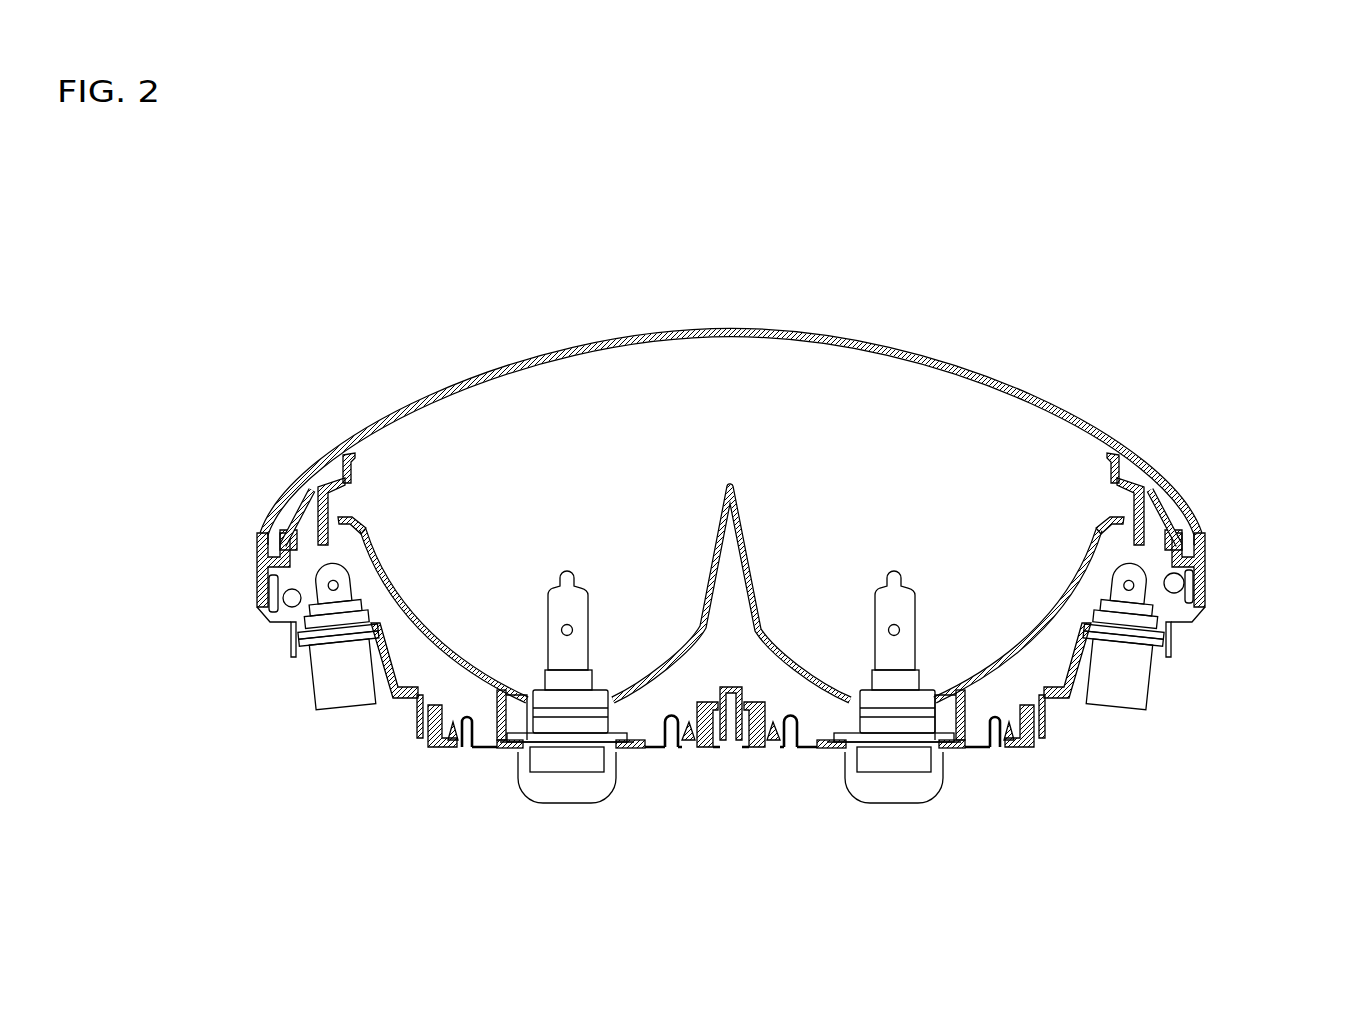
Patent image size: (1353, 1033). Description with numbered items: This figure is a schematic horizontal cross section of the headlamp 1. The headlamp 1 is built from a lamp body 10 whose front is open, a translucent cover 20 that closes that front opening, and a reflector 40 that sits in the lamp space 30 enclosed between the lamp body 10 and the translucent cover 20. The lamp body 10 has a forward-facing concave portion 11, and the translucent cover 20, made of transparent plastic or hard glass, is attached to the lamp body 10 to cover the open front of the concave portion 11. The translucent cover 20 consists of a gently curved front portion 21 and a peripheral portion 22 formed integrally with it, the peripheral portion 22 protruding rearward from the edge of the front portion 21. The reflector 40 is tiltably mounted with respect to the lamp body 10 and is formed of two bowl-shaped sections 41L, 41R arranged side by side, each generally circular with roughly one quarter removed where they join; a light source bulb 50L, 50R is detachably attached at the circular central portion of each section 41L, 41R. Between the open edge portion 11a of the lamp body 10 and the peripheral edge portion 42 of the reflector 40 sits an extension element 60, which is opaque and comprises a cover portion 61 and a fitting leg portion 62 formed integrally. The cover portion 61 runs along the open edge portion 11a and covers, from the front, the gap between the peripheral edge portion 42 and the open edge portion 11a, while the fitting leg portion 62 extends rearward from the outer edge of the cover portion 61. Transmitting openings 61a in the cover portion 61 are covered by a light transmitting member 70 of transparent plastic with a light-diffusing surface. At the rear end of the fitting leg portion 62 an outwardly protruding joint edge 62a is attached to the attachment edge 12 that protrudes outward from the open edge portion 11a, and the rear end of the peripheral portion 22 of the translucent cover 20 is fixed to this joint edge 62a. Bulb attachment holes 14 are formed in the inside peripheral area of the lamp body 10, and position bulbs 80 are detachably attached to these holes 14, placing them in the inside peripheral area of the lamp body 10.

The headlamp 1 is at (1000, 338).
The lamp body 10 is at (1185, 622).
The concave portion 11 is at (418, 668).
The open edge portion 11a is at (266, 620).
The attachment edge 12 is at (282, 628).
The bulb attachment hole 14 is at (322, 660).
The translucent cover 20 is at (683, 330).
The front portion 21 is at (548, 347).
The peripheral portion 22 is at (257, 530).
The lamp space 30 is at (1058, 640).
The reflector 40 is at (737, 512).
The left side section 41L is at (450, 600).
The right side section 41R is at (1063, 567).
The peripheral edge portion 42 is at (343, 548).
The light source bulb 50L is at (580, 585).
The light source bulb 50R is at (905, 585).
The extension element 60 is at (325, 487).
The cover portion 61 is at (1145, 475).
The transmitting opening 61a is at (288, 540).
The fitting leg portion 62 is at (258, 573).
The joint edge 62a is at (1207, 513).
The light transmitting member 70 is at (297, 482).
The position bulb 80 is at (357, 527).